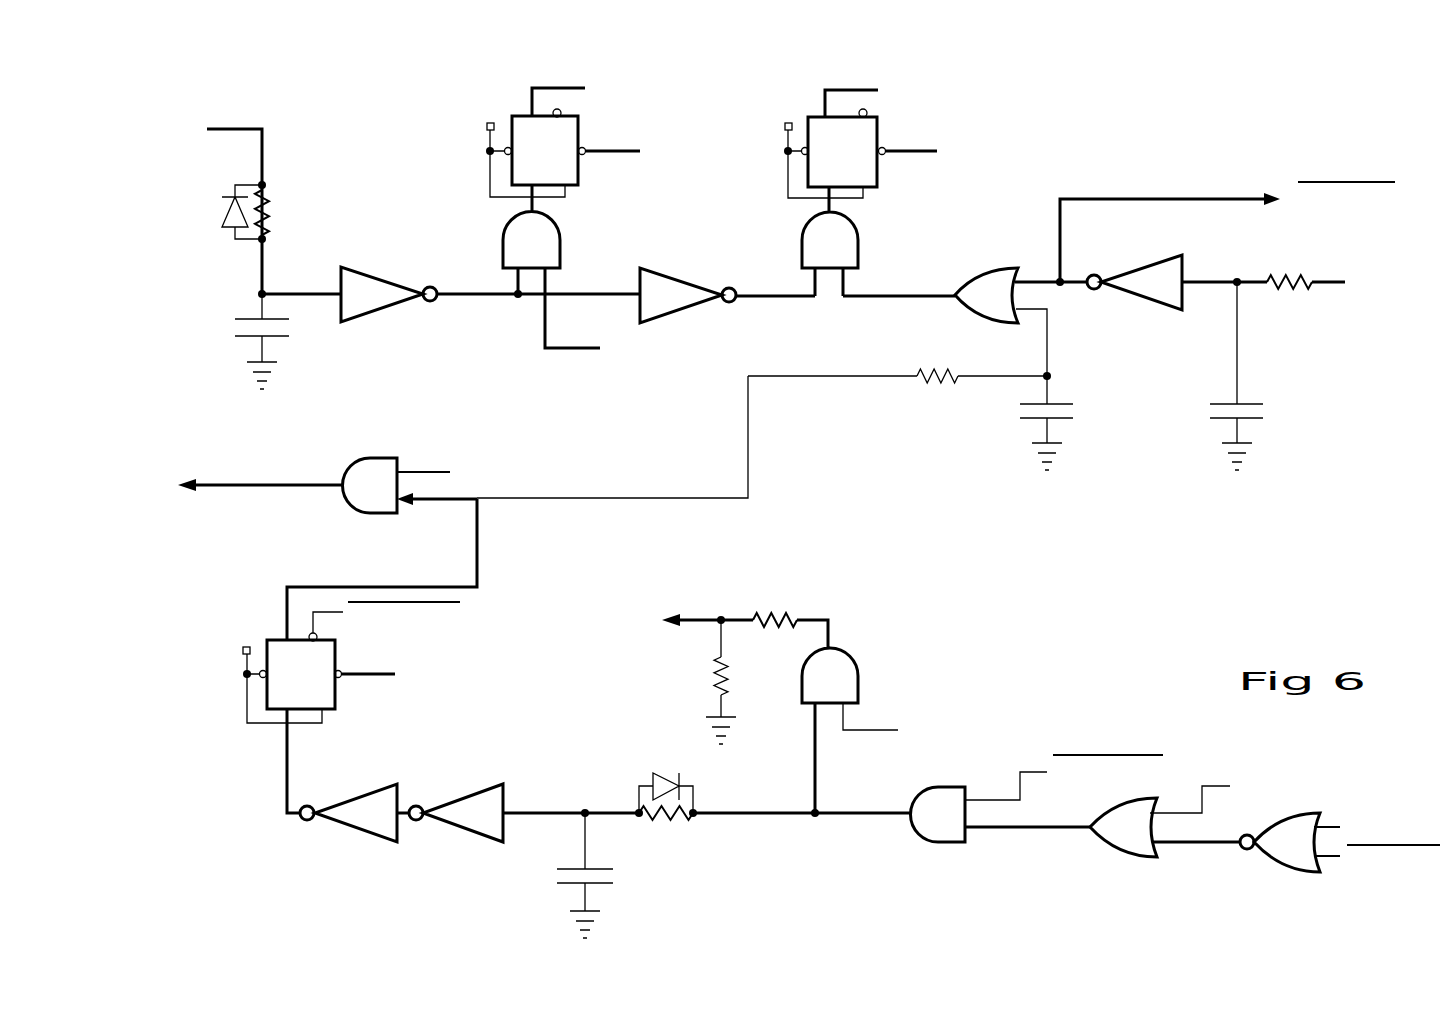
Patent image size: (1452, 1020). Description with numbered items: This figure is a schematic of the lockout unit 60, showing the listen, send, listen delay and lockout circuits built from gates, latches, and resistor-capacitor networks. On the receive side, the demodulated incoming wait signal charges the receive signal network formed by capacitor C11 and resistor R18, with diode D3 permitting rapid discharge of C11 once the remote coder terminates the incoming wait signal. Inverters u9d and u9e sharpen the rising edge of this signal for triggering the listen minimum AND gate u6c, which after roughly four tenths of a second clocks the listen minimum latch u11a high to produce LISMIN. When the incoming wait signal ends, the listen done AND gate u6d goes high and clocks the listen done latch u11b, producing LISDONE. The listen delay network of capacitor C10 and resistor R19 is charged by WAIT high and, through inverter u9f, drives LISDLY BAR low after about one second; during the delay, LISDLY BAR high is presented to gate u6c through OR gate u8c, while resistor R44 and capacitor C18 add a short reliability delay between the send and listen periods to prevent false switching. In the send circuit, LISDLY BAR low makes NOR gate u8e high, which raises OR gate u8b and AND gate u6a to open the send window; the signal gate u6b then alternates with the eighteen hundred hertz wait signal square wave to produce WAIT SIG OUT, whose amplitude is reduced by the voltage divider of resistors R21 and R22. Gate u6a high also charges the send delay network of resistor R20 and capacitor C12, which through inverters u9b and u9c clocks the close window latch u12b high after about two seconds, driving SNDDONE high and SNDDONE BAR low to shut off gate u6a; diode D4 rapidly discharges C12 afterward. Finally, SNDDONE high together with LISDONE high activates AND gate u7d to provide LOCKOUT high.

The lockout unit 60 is at (1268, 599).
The diode D3 is at (222, 212).
The receive signal resistor R18 is at (286, 212).
The receive signal capacitor C11 is at (233, 341).
The inverter u9d is at (389, 294).
The listen done AND gate u6d is at (601, 274).
The listen done latch u11b is at (578, 136).
The inverter u9e is at (688, 295).
The listen minimum AND gate u6c is at (830, 241).
The listen minimum latch u11a is at (866, 137).
The OR gate u8c is at (1175, 279).
The resistor R44 is at (764, 420).
The capacitor C18 is at (1015, 423).
The inverter u9f is at (1163, 282).
The listen delay resistor R19 is at (1341, 271).
The listen delay capacitor C10 is at (1205, 376).
The AND gate u7d is at (372, 547).
The close window latch u12b is at (333, 707).
The inverter u9c is at (354, 813).
The inverter u9b is at (524, 813).
The send signal capacitor C12 is at (553, 875).
The send signal resistor R20 is at (666, 828).
The diode D4 is at (666, 778).
The signal gate u6b is at (868, 716).
The wait signal voltage divider resistor R21 is at (667, 617).
The wait signal voltage divider resistor R22 is at (742, 682).
The AND gate u6a is at (1036, 798).
The OR gate u8b is at (1219, 814).
The NOR gate u8e is at (1340, 844).